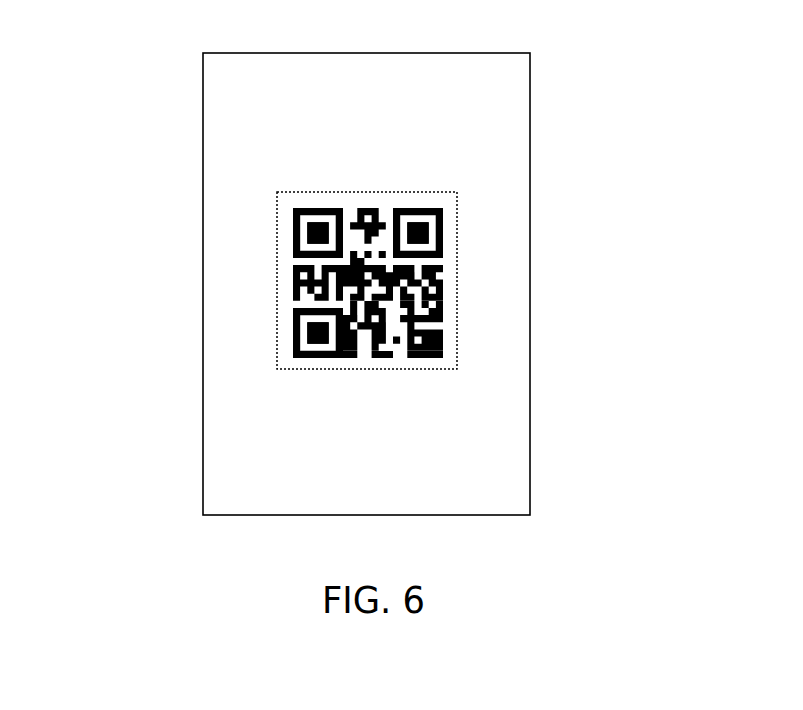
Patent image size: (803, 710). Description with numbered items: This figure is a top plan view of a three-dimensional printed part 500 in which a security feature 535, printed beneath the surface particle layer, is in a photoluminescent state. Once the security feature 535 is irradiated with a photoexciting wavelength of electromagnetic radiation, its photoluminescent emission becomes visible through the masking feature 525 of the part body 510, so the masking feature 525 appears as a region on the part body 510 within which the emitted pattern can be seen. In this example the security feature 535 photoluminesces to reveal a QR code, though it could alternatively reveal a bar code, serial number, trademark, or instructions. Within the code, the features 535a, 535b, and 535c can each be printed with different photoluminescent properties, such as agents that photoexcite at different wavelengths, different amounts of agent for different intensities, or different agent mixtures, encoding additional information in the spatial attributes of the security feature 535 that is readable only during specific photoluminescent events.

The 3-dimensional printed part 500 is at (374, 257).
The part body 510 is at (466, 140).
The masking feature 525 is at (455, 293).
The security feature 535 is at (374, 285).
The feature 535a is at (418, 229).
The feature 535b is at (310, 233).
The feature 535c is at (310, 332).